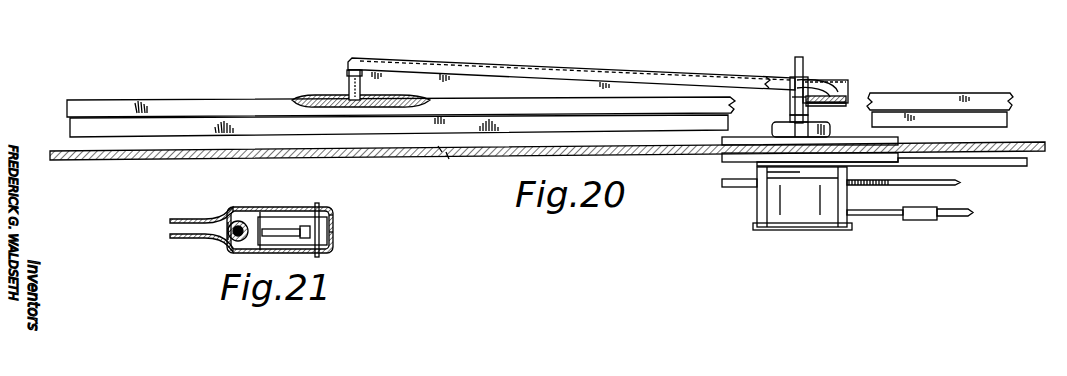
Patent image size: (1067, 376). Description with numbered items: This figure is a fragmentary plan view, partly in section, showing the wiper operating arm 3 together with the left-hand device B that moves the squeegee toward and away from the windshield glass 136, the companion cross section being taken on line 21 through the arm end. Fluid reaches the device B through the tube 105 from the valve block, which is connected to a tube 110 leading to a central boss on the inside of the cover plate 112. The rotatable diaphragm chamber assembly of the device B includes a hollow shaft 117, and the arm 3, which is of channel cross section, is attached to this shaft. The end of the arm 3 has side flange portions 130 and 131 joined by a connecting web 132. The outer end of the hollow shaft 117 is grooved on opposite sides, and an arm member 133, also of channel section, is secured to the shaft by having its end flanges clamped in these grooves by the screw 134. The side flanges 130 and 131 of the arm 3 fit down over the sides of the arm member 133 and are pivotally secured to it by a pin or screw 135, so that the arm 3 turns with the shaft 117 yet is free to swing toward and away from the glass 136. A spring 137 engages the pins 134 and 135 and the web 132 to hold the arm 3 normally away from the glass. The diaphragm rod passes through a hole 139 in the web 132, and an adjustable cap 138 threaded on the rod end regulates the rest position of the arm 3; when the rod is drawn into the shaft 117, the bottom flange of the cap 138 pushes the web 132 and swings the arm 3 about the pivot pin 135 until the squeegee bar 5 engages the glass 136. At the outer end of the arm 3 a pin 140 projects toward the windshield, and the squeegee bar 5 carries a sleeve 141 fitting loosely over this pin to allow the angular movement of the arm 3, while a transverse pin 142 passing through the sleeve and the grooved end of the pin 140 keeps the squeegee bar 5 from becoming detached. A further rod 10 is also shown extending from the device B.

In FIG. 20, the arm 3 is at (480, 62).
In FIG. 21, the arm 3 is at (175, 218).
In FIG. 20, the squeegee bar 5 is at (152, 120).
In FIG. 20, the rod 10 is at (928, 185).
In FIG. 20, the section line 21 is at (765, 86).
In FIG. 20, the tube 105 is at (945, 220).
In FIG. 20, the tube 110 is at (876, 216).
In FIG. 20, the cover plate 112 is at (786, 230).
In FIG. 20, the hollow shaft 117 is at (792, 117).
In FIG. 21, the hollow shaft 117 is at (218, 238).
In FIG. 20, the side flange portion 130 is at (790, 100).
In FIG. 21, the side flange portion 130 is at (300, 207).
In FIG. 21, the side flange portion 131 is at (321, 254).
In FIG. 20, the connecting web 132 is at (843, 80).
In FIG. 20, the arm member 133 is at (845, 104).
In FIG. 20, the screw 134 is at (815, 102).
In FIG. 21, the screw 134 is at (257, 213).
In FIG. 20, the pin or screw 135 is at (866, 93).
In FIG. 21, the pin or screw 135 is at (334, 218).
In FIG. 20, the windshield glass 136 is at (164, 162).
In FIG. 20, the spring 137 is at (832, 80).
In FIG. 21, the spring 137 is at (334, 233).
In FIG. 20, the adjustable cap 138 is at (797, 60).
In FIG. 20, the hole 139 is at (818, 84).
In FIG. 21, the hole 139 is at (238, 221).
In FIG. 20, the pin 140 is at (348, 64).
In FIG. 20, the sleeve 141 is at (348, 76).
In FIG. 20, the transverse pin 142 is at (362, 83).
In FIG. 20, the device B is at (768, 203).